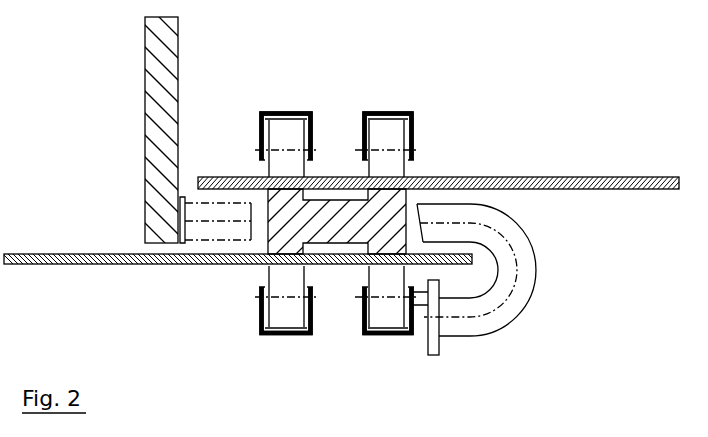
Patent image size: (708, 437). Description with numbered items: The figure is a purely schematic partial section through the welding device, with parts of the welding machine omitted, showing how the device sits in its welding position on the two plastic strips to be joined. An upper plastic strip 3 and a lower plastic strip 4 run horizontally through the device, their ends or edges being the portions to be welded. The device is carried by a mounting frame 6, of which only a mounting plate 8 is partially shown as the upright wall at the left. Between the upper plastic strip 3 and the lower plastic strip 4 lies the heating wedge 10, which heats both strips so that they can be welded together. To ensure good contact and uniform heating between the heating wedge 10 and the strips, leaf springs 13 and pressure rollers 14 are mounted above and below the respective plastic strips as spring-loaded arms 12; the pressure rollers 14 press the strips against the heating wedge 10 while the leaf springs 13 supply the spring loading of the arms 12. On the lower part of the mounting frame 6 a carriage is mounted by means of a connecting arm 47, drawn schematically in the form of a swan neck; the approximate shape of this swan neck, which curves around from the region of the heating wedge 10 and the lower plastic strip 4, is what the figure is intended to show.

The upper plastic strip 3 is at (595, 189).
The lower plastic strip 4 is at (124, 257).
The mounting frame 6 is at (88, 85).
The mounting plate 8 is at (160, 57).
The heating wedge 10 is at (389, 219).
The spring-loaded arms 12 is at (309, 110).
The leaf springs 13 is at (337, 224).
The pressure rollers 14 is at (286, 136).
The connecting arm 47 is at (196, 228).